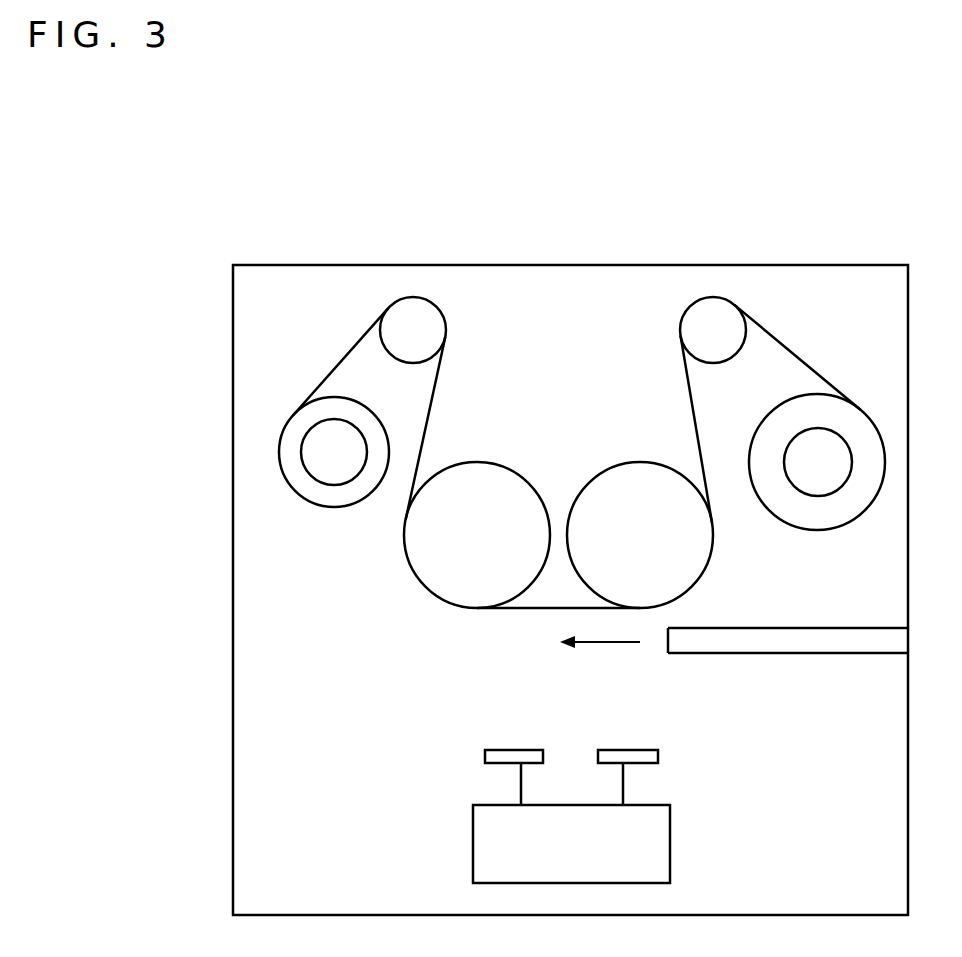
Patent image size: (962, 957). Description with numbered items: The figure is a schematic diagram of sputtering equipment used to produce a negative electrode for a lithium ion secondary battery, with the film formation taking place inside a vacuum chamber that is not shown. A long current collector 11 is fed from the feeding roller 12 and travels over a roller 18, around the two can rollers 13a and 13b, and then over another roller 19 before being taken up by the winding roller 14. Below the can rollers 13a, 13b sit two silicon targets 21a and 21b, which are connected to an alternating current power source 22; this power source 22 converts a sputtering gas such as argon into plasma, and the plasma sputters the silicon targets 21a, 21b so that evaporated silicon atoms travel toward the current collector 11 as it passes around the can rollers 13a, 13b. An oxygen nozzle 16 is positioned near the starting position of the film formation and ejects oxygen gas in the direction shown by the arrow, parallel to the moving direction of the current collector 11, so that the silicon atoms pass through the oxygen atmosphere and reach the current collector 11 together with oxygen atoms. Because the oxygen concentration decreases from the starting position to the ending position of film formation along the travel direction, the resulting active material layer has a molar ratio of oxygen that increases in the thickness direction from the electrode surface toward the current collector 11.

The current collector 11 is at (697, 430).
The feeding roller 12 is at (823, 452).
The can roller 13a is at (628, 488).
The can roller 13b is at (482, 478).
The winding roller 14 is at (317, 430).
The oxygen nozzle 16 is at (785, 640).
The roller 18 is at (708, 315).
The roller 19 is at (411, 317).
The silicon target 21a is at (625, 757).
The silicon target 21b is at (514, 757).
The alternating current power source 22 is at (485, 858).